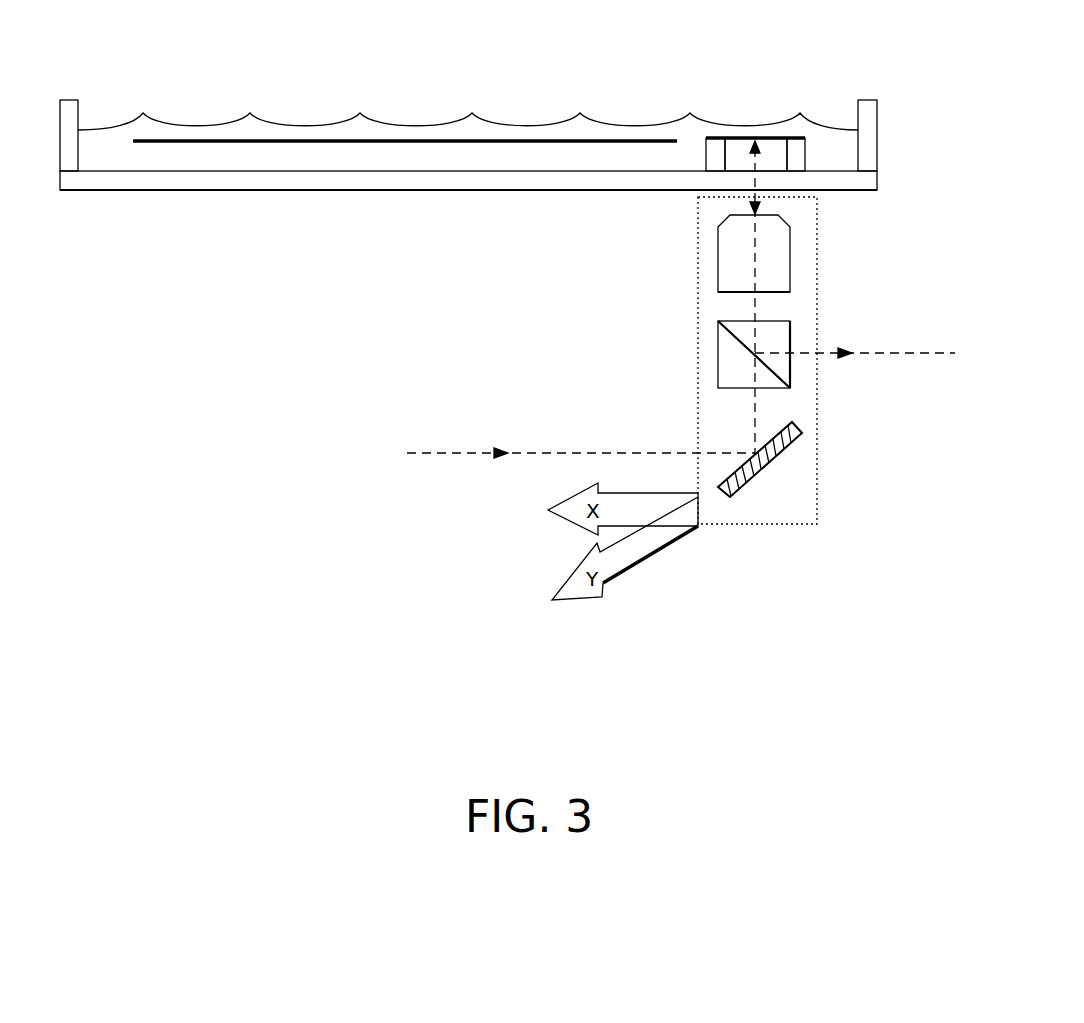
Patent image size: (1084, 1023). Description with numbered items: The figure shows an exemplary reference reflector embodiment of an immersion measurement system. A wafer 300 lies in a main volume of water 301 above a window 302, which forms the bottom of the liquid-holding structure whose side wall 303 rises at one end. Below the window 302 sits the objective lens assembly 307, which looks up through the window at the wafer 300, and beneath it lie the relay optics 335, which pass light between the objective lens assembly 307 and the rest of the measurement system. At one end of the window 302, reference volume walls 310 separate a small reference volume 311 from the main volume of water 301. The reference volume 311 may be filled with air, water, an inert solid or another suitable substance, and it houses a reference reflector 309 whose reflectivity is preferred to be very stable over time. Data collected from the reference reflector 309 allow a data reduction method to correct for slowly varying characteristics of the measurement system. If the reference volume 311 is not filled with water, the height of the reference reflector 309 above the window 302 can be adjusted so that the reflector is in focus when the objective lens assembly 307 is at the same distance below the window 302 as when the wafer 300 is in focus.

The wafer 300 is at (445, 141).
The main volume of water 301 is at (472, 112).
The window 302 is at (567, 190).
The container wall 303 is at (70, 100).
The objective lens assembly 307 is at (718, 282).
The reference reflector 309 is at (745, 145).
The reference volume walls 310 is at (717, 152).
The reference volume 311 is at (773, 152).
The relay optics 335 is at (718, 371).